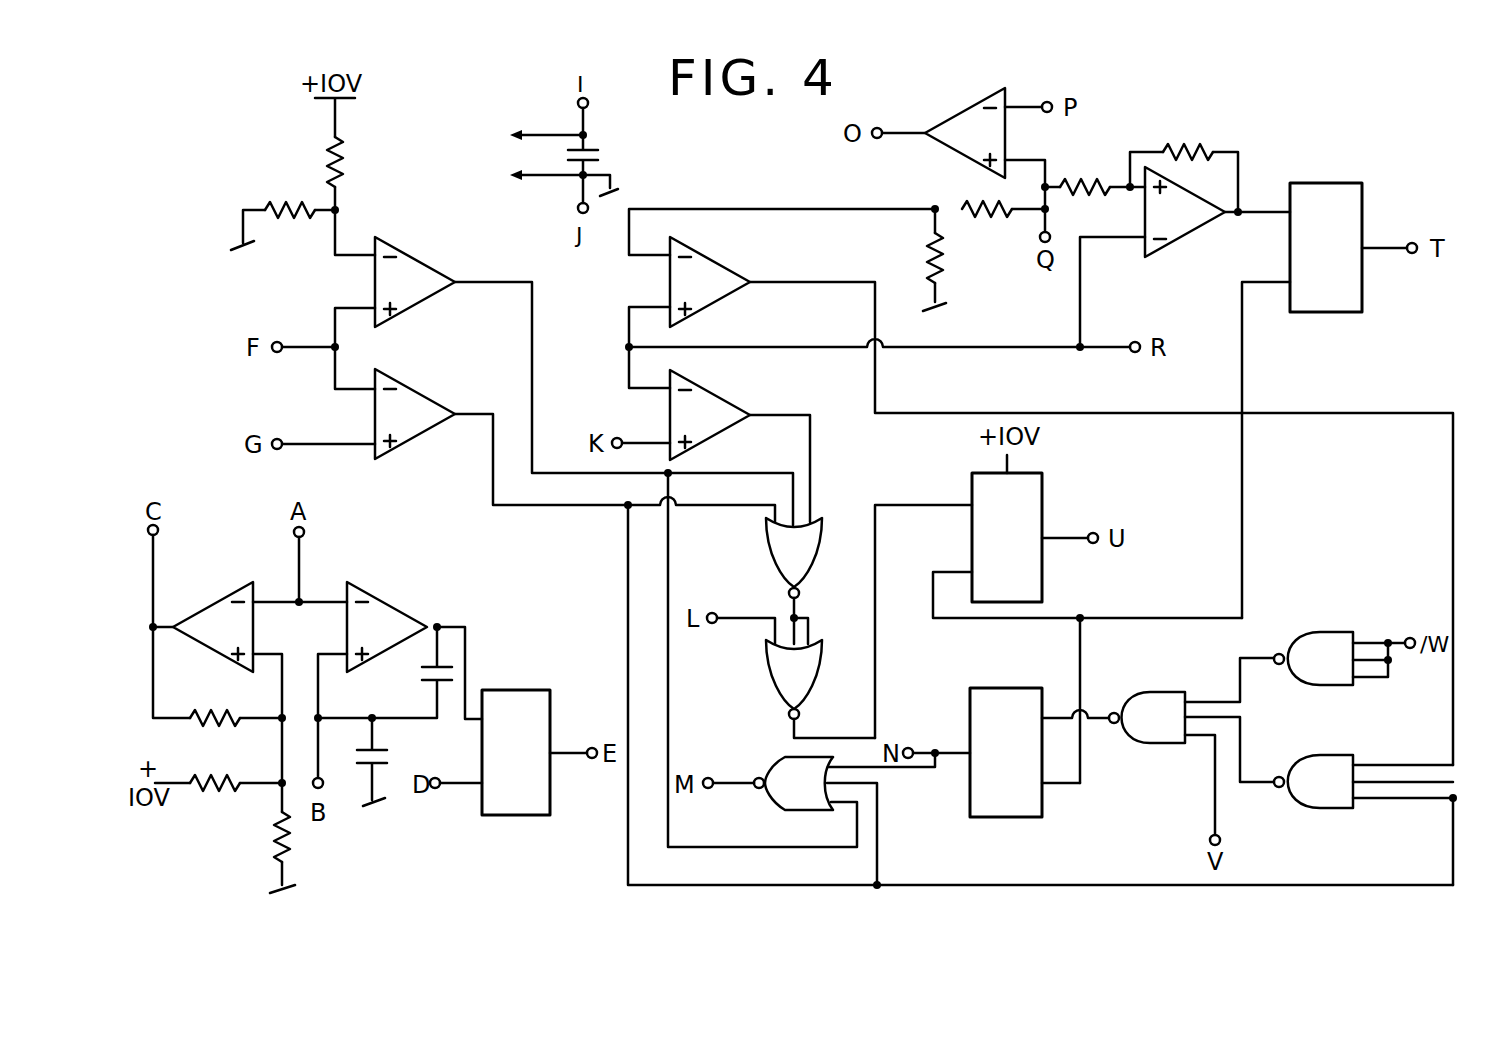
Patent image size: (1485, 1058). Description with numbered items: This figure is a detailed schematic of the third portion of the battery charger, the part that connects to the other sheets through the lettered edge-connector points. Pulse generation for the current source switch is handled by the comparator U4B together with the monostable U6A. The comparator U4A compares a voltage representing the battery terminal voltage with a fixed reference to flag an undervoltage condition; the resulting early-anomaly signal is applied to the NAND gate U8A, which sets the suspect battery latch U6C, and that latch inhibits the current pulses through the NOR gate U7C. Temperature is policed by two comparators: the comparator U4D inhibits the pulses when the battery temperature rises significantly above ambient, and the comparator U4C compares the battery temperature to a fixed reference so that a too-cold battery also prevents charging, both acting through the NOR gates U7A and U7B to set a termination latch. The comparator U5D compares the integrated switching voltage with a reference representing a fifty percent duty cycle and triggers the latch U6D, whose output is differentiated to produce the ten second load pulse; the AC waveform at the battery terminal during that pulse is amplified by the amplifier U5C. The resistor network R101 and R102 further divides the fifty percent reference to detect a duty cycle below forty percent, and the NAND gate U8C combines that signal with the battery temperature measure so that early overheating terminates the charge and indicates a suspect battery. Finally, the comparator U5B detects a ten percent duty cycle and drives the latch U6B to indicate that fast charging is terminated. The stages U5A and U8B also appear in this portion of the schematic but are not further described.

The comparator U4A is at (212, 612).
The comparator U4B is at (385, 617).
The comparator U4C is at (410, 268).
The comparator U4D is at (425, 400).
The comparator U5A is at (717, 287).
The comparator U5B is at (718, 410).
The amplifier U5C is at (962, 148).
The comparator U5D is at (1180, 232).
The monostable U6A is at (520, 800).
The latch U6B is at (1042, 578).
The suspect battery latch U6C is at (988, 800).
The latch U6D is at (1350, 197).
The NOR gate U7A is at (777, 547).
The NOR gate U7B is at (785, 658).
The NOR gate U7C is at (808, 795).
The NAND gate U8A is at (1150, 730).
The NAND gate U8B is at (1323, 640).
The NAND gate U8C is at (1325, 795).
The resistor R101 is at (985, 218).
The resistor R102 is at (926, 258).